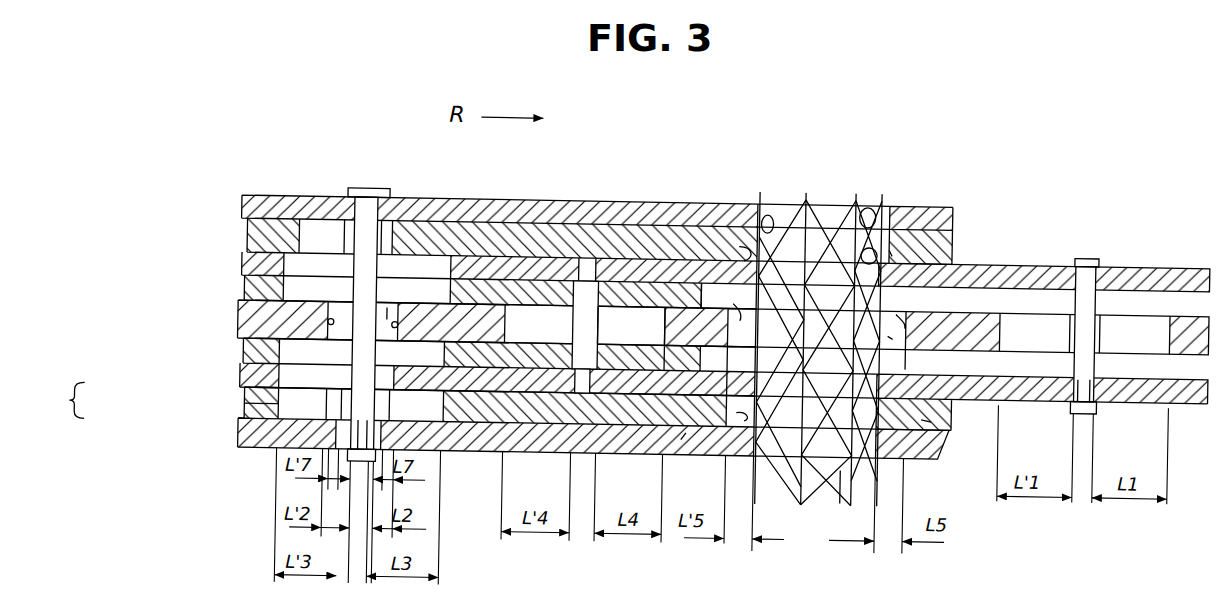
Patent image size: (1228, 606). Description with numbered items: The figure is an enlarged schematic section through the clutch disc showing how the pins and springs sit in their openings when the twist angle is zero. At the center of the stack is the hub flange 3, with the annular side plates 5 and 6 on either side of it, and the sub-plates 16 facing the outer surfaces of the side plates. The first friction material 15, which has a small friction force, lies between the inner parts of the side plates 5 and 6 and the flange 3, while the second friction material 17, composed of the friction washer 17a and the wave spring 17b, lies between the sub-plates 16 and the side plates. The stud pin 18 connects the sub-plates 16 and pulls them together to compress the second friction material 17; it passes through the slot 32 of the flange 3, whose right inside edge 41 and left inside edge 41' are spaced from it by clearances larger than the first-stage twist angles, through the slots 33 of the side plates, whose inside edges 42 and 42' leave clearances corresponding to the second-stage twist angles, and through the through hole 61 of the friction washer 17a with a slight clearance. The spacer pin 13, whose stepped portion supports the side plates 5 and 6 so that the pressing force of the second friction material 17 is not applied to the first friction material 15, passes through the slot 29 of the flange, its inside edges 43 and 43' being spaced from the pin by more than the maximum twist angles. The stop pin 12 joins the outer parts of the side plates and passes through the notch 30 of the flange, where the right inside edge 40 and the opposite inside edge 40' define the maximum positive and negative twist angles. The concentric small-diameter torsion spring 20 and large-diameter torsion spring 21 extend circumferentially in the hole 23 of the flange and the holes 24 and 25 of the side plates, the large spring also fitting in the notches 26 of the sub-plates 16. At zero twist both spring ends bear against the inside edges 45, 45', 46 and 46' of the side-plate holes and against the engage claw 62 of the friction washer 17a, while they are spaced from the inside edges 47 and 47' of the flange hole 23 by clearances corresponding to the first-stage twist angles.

The hub flange 3 is at (240, 318).
The side plate 5 is at (243, 375).
The side plate 6 is at (243, 262).
The stop pin 12 is at (1088, 243).
The spacer pin 13 is at (588, 257).
The first friction material 15 is at (246, 290).
The sub-plate 16 is at (242, 208).
The second friction material 17 is at (402, 322).
The friction washer 17a is at (248, 239).
The wave spring 17b is at (248, 411).
The stud pin 18 is at (370, 186).
The torsion spring 20 is at (786, 216).
The torsion spring 21 is at (806, 202).
The hole 23 is at (895, 328).
The hole 24 is at (839, 498).
The hole 25 is at (890, 239).
The notch 26 is at (840, 200).
The slot 29 is at (607, 307).
The notch 30 is at (1118, 300).
The slot 32 is at (389, 305).
The slot 33 is at (436, 232).
The right inside edge 40 is at (1134, 334).
The opposite inside edge 40' is at (1034, 332).
The right inside edge 41 is at (425, 322).
The left inside edge 41' is at (299, 319).
The inside edge 42 is at (421, 321).
The inside edge 42' is at (307, 319).
The inside edge 43 is at (641, 326).
The inside edge 43' is at (521, 324).
The inside edge 45 is at (953, 438).
The inside edge 45' is at (772, 407).
The inside edge 46 is at (953, 246).
The inside edge 46' is at (737, 204).
The inside edge 47 is at (919, 328).
The inside edge 47' is at (722, 302).
The through hole 61 is at (412, 260).
The engage claw 62 is at (773, 221).